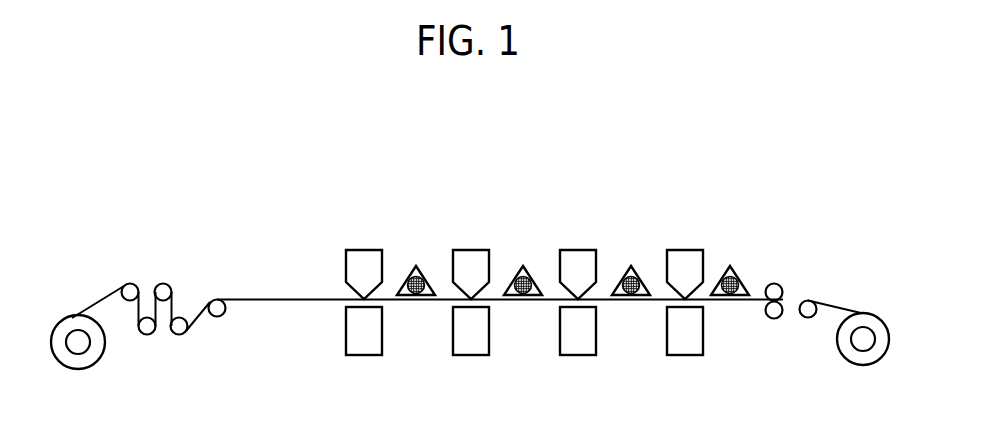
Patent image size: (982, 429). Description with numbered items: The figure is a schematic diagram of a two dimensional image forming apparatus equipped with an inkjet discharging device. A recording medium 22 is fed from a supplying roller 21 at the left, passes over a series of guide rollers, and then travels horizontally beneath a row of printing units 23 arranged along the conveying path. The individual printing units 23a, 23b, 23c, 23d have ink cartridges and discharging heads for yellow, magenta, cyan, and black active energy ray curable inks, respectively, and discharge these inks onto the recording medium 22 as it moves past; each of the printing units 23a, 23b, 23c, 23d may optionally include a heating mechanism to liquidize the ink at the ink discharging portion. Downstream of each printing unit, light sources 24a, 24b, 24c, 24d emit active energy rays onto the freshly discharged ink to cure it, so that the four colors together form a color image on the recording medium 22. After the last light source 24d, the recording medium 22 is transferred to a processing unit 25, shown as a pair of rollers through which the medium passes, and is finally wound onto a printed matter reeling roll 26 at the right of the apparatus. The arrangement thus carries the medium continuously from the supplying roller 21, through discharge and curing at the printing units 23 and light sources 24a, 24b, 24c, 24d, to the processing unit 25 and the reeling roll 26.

The supplying roller 21 is at (80, 347).
The recording medium 22 is at (267, 298).
The printing units 23 is at (343, 210).
The printing unit 23a is at (365, 261).
The printing unit 23b is at (471, 261).
The printing unit 23c is at (578, 261).
The printing unit 23d is at (685, 261).
The light source 24a is at (418, 269).
The light source 24b is at (525, 269).
The light source 24c is at (633, 269).
The light source 24d is at (732, 269).
The processing unit 25 is at (775, 283).
The printed matter reeling roll 26 is at (866, 345).